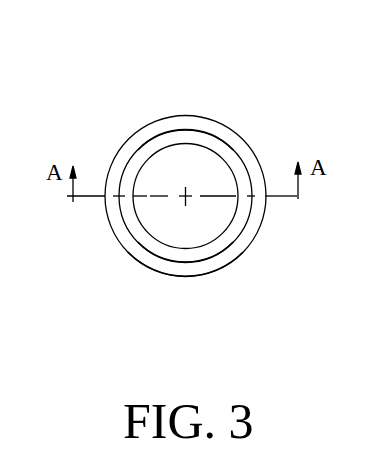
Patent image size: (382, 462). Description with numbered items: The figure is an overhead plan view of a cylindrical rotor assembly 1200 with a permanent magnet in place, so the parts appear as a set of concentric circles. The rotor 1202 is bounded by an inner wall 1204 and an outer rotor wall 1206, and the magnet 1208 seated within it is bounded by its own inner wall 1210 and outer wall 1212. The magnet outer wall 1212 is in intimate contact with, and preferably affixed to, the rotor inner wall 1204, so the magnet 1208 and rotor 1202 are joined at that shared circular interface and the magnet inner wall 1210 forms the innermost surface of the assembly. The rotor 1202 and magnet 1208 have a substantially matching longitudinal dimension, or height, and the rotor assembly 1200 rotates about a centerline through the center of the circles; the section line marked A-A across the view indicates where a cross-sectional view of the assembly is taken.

The cylindrical rotor assembly 1200 is at (296, 72).
The rotor 1202 is at (128, 152).
The inner wall 1204 is at (242, 230).
The outer rotor wall 1206 is at (222, 268).
The magnet 1208 is at (183, 141).
The inner wall 1210 is at (138, 178).
The outer wall 1212 is at (163, 259).